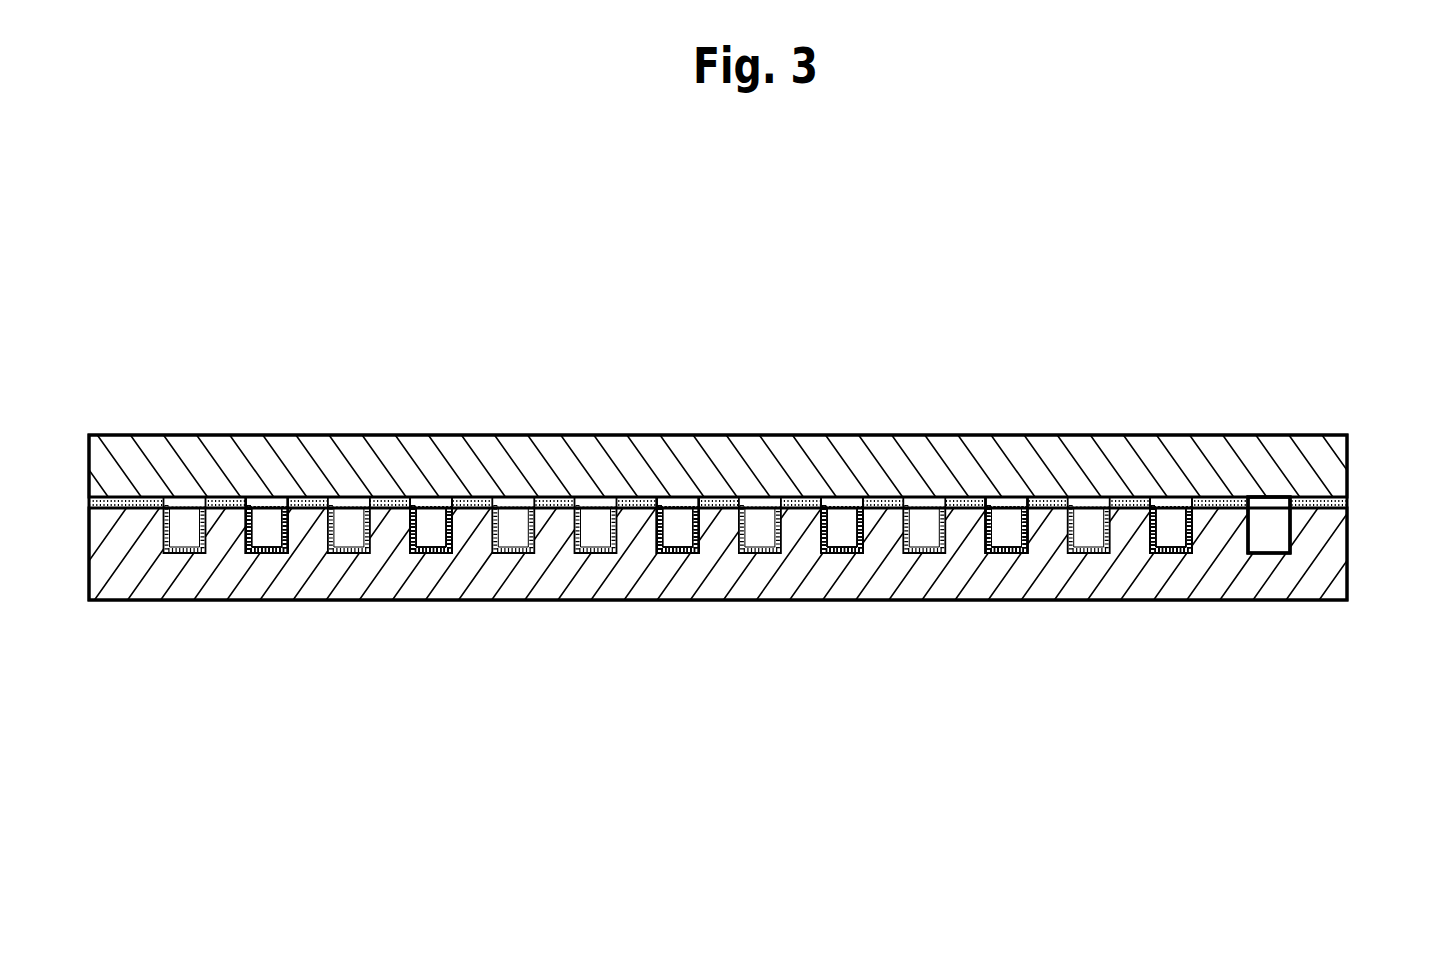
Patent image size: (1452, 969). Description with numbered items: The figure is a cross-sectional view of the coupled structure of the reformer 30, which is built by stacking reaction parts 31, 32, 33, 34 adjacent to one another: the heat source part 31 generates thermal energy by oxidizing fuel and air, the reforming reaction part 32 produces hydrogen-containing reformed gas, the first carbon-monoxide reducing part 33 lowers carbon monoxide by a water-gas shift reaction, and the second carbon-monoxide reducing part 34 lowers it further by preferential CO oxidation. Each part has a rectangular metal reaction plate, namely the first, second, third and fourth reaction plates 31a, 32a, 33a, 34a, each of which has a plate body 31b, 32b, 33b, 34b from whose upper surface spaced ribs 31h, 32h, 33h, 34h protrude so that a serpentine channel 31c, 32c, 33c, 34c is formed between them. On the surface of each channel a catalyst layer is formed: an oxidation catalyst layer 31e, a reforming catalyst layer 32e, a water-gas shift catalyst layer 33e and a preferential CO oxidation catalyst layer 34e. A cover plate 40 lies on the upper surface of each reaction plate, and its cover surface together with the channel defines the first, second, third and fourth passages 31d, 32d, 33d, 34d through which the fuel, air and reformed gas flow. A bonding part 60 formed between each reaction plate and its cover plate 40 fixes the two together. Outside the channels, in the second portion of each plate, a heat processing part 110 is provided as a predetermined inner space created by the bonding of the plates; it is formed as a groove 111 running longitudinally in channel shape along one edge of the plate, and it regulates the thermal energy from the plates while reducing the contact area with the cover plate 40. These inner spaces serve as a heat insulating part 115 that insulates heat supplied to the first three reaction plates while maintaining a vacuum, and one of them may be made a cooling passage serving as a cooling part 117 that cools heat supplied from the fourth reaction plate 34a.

The reformer 30 is at (777, 210).
The heat source part 31 is at (1228, 300).
The reforming reaction part 32 is at (718, 466).
The first carbon-monoxide reducing part 33 is at (718, 466).
The second carbon-monoxide reducing part 34 is at (718, 466).
The cover plate 40 is at (366, 429).
The bonding part 60 is at (668, 492).
The heat processing part 110 is at (1310, 539).
The groove 111 is at (1287, 543).
The heat insulating part 115 is at (1276, 505).
The cooling part 117 is at (1269, 525).
The first reaction plate 31a is at (645, 618).
The second reaction plate 32a is at (678, 525).
The third reaction plate 33a is at (678, 525).
The fourth reaction plate 34a is at (678, 525).
The plate body 31b is at (247, 600).
The groove b 32b is at (267, 525).
The groove b 33b is at (267, 525).
The groove b 34b is at (267, 525).
The first channel 31c is at (1005, 555).
The second channel 32c is at (1007, 525).
The third channel 33c is at (1007, 525).
The fourth channel 34c is at (1007, 525).
The first passage 31d is at (431, 562).
The second passage 32d is at (431, 525).
The third passage 33d is at (431, 525).
The fourth passage 34d is at (431, 525).
The oxidation catalyst layer 31e is at (1170, 555).
The reforming catalyst layer 32e is at (1171, 525).
The water-gas shift catalyst layer 33e is at (1171, 525).
The preferential CO oxidation catalyst layer 34e is at (1171, 525).
The ribs 31h is at (871, 497).
The groove h 32h is at (842, 525).
The groove h 33h is at (842, 525).
The groove h 34h is at (842, 525).